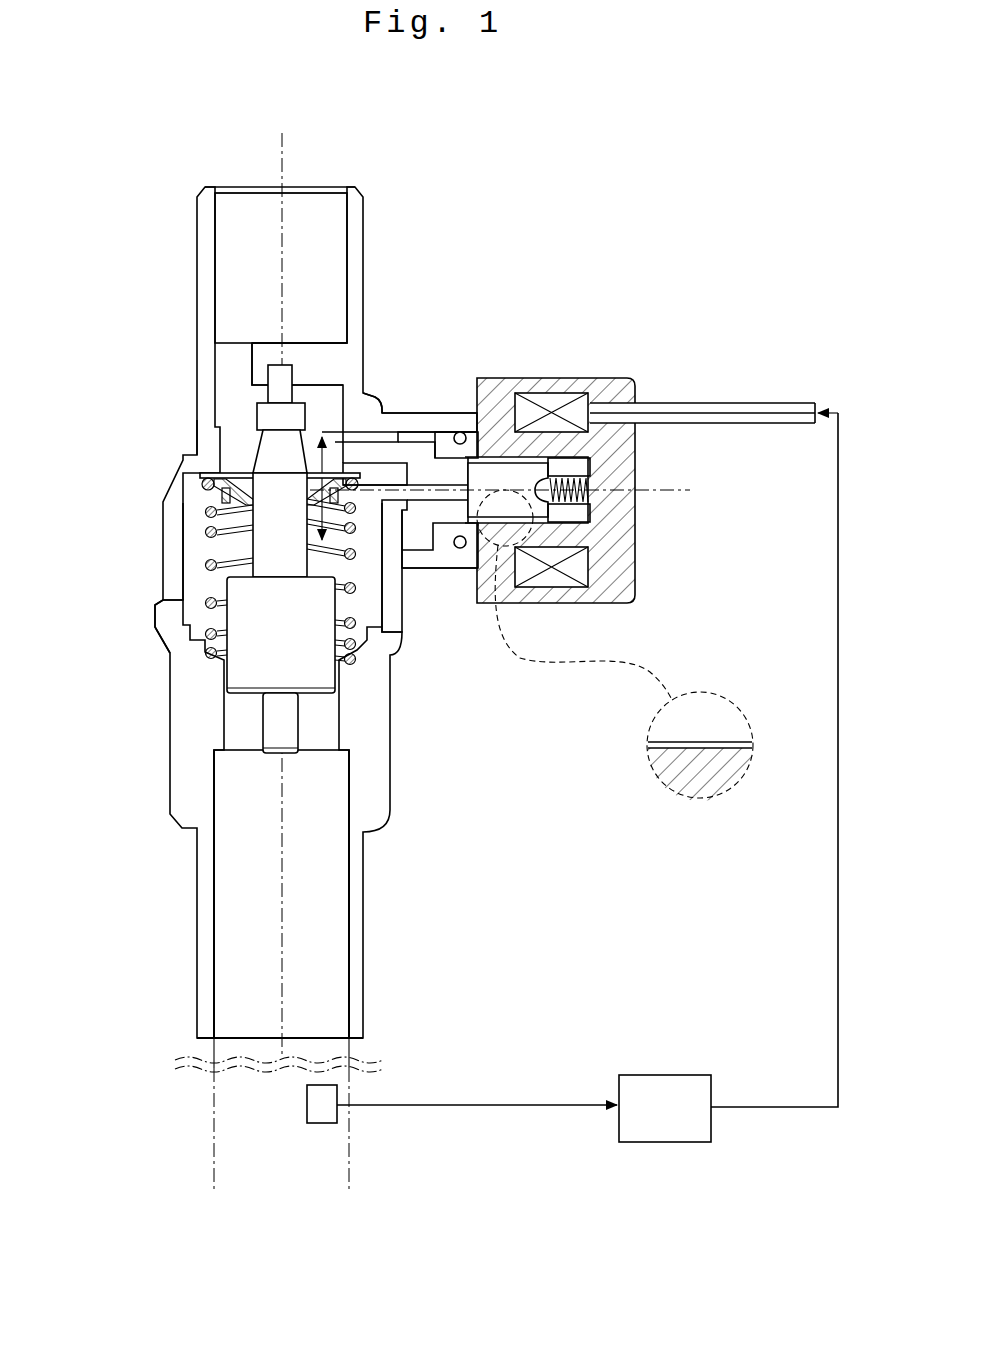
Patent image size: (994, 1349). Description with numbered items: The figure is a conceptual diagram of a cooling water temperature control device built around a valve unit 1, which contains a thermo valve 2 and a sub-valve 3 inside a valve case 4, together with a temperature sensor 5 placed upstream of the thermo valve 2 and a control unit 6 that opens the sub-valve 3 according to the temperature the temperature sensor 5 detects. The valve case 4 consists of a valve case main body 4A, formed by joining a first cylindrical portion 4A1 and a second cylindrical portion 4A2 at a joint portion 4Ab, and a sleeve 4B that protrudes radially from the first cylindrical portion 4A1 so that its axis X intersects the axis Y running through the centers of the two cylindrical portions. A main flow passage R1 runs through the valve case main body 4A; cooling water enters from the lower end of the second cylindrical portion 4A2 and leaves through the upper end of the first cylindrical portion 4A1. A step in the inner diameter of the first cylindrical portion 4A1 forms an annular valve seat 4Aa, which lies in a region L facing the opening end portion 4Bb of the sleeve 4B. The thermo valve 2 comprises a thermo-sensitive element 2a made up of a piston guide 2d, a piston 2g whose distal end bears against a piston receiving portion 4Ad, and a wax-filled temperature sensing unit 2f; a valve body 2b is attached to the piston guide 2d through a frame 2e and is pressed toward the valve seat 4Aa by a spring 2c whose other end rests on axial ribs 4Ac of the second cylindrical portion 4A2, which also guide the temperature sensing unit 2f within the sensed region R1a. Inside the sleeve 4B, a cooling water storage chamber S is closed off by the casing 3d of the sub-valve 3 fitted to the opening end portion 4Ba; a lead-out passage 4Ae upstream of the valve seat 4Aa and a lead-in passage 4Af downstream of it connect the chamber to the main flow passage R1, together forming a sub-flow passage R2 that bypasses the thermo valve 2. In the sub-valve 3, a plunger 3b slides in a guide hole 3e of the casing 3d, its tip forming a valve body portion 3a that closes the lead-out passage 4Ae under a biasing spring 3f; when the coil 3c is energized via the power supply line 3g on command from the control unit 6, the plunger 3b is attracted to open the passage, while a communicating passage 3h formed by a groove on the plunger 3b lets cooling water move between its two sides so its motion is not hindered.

The valve unit 1 is at (180, 177).
The thermo valve 2 is at (284, 547).
The thermo-sensitive element 2a is at (243, 677).
The valve body 2b is at (203, 486).
The spring 2c is at (204, 566).
The piston guide 2d is at (265, 417).
The frame 2e is at (232, 470).
The temperature sensing unit 2f is at (256, 785).
The piston 2g is at (288, 372).
The sub-valve 3 is at (640, 370).
The valve body portion 3a is at (427, 478).
The plunger 3b is at (526, 497).
The coil 3c is at (578, 560).
The casing 3d is at (608, 378).
The guide hole 3e is at (502, 462).
The biasing spring 3f is at (590, 495).
The power supply line 3g is at (743, 402).
The communicating passage 3h is at (700, 750).
The valve case 4 is at (423, 188).
The valve case main body 4A is at (193, 328).
The first cylindrical portion 4A1 is at (180, 493).
The second cylindrical portion 4A2 is at (183, 688).
The valve seat 4Aa is at (205, 437).
The joint portion 4Ab is at (157, 603).
The ribs 4Ac is at (222, 695).
The piston receiving portion 4Ad is at (275, 343).
The lead-out passage 4Ae is at (387, 523).
The lead-in passage 4Af is at (372, 396).
The sleeve 4B is at (441, 407).
The opening end portion 4Ba is at (460, 432).
The opening end portion 4Bb is at (362, 448).
The temperature sensor 5 is at (335, 1105).
The control unit 6 is at (690, 1075).
The main flow passage R1 is at (318, 230).
The sensed region R1a is at (183, 573).
The sub-flow passage R2 is at (423, 351).
The cooling water storage chamber S is at (413, 530).
The region L is at (367, 424).
The axis X is at (510, 490).
The axis Y is at (280, 585).